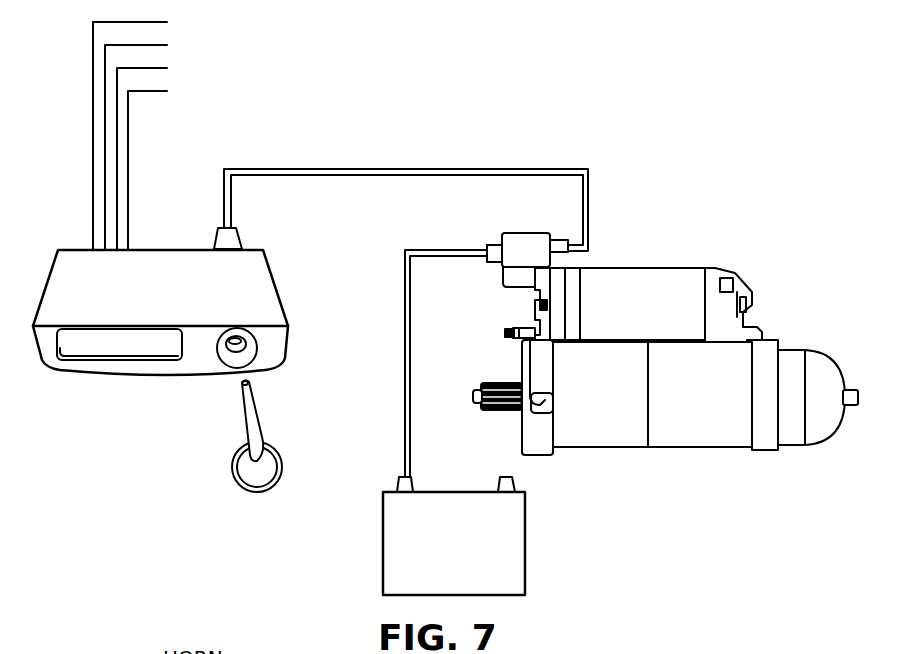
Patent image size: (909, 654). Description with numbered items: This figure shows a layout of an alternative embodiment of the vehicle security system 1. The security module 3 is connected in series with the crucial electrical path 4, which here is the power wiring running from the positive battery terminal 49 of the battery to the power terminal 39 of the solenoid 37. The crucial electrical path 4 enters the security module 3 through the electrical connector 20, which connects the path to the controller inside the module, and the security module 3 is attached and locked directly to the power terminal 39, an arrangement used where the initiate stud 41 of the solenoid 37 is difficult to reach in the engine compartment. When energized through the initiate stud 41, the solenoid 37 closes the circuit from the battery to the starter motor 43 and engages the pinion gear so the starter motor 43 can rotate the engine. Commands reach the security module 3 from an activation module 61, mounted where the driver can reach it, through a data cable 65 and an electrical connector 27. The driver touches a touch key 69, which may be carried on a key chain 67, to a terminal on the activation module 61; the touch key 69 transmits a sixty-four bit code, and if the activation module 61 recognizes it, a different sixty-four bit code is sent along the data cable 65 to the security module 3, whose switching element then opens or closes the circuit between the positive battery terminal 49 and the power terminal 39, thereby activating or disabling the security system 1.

The security system 1 is at (548, 146).
The security module 3 is at (514, 232).
The crucial electrical path 4 is at (404, 324).
The electrical connector 20 is at (490, 262).
The electrical connector 27 is at (560, 240).
The solenoid 37 is at (662, 268).
The power terminal 39 is at (505, 333).
The initiate stud 41 is at (532, 305).
The starter motor 43 is at (713, 433).
The positive battery terminal 49 is at (527, 535).
The activation module 61 is at (68, 268).
The data cable 65 is at (408, 170).
The key chain 67 is at (283, 470).
The touch key 69 is at (260, 418).